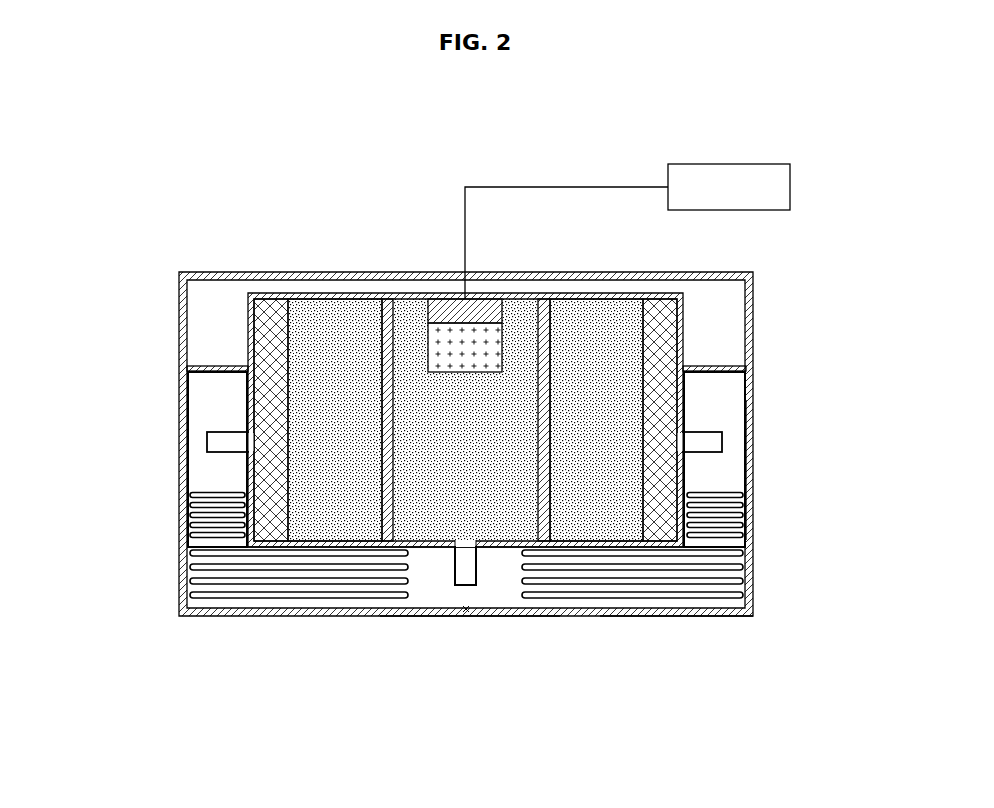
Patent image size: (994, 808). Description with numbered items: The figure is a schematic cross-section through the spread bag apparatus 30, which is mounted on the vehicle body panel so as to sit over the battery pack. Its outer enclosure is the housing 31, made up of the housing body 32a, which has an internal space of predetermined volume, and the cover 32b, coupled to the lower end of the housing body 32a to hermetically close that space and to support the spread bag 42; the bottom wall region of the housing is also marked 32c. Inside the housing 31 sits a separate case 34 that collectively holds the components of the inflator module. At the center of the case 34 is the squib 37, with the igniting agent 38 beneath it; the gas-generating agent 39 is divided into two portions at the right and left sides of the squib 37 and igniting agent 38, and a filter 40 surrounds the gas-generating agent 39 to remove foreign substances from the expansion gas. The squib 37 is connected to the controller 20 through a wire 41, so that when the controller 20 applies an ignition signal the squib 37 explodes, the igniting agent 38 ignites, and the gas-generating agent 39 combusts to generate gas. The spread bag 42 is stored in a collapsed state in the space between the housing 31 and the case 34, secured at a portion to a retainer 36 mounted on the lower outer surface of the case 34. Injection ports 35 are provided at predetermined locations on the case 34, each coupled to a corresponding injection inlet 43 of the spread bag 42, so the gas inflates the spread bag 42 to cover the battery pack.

The controller 20 is at (715, 164).
The spread bag apparatus 30 is at (158, 576).
The housing 31 is at (873, 560).
The housing body 32a is at (753, 535).
The cover 32b is at (748, 616).
The housing bottom wall 32c is at (466, 617).
The case 34 is at (680, 400).
The injection port 35 is at (210, 440).
The retainer 36 is at (383, 547).
The squib 37 is at (448, 308).
The igniting agent 38 is at (413, 315).
The gas-generating agent 39 is at (338, 310).
The filter 40 is at (268, 310).
The wire 41 is at (540, 187).
The spread bag 42 is at (272, 587).
The injection inlet 43 is at (240, 440).